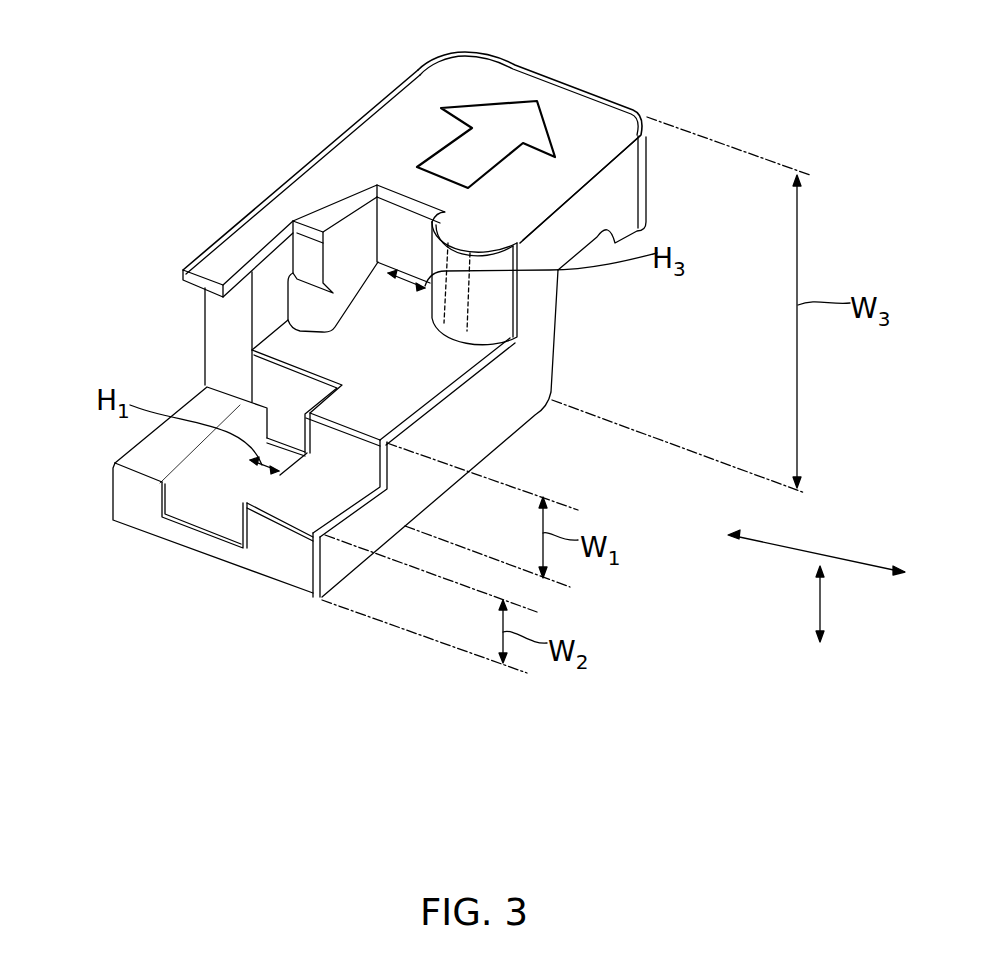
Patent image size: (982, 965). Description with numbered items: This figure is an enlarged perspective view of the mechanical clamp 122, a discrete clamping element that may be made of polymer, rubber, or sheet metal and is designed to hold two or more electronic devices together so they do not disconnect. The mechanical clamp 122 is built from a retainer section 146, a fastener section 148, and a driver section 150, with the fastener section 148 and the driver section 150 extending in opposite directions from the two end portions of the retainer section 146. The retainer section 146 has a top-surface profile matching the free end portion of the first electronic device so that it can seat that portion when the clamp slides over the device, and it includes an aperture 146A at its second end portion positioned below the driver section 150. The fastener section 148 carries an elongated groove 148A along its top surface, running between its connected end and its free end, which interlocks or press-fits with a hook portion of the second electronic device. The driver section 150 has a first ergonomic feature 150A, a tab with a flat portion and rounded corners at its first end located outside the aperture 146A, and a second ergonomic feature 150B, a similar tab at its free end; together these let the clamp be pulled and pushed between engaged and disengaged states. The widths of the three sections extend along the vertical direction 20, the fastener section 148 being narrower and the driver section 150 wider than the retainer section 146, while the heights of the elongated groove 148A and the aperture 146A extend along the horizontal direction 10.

The horizontal direction 10 is at (838, 557).
The vertical direction 20 is at (820, 603).
The mechanical clamp 122 is at (401, 320).
The retainer section 146 is at (337, 385).
The aperture 146A is at (387, 285).
The fastener section 148 is at (162, 509).
The elongated groove 148A is at (225, 512).
The driver section 150 is at (431, 152).
The first ergonomic feature 150A is at (310, 247).
The second ergonomic feature 150B is at (523, 80).